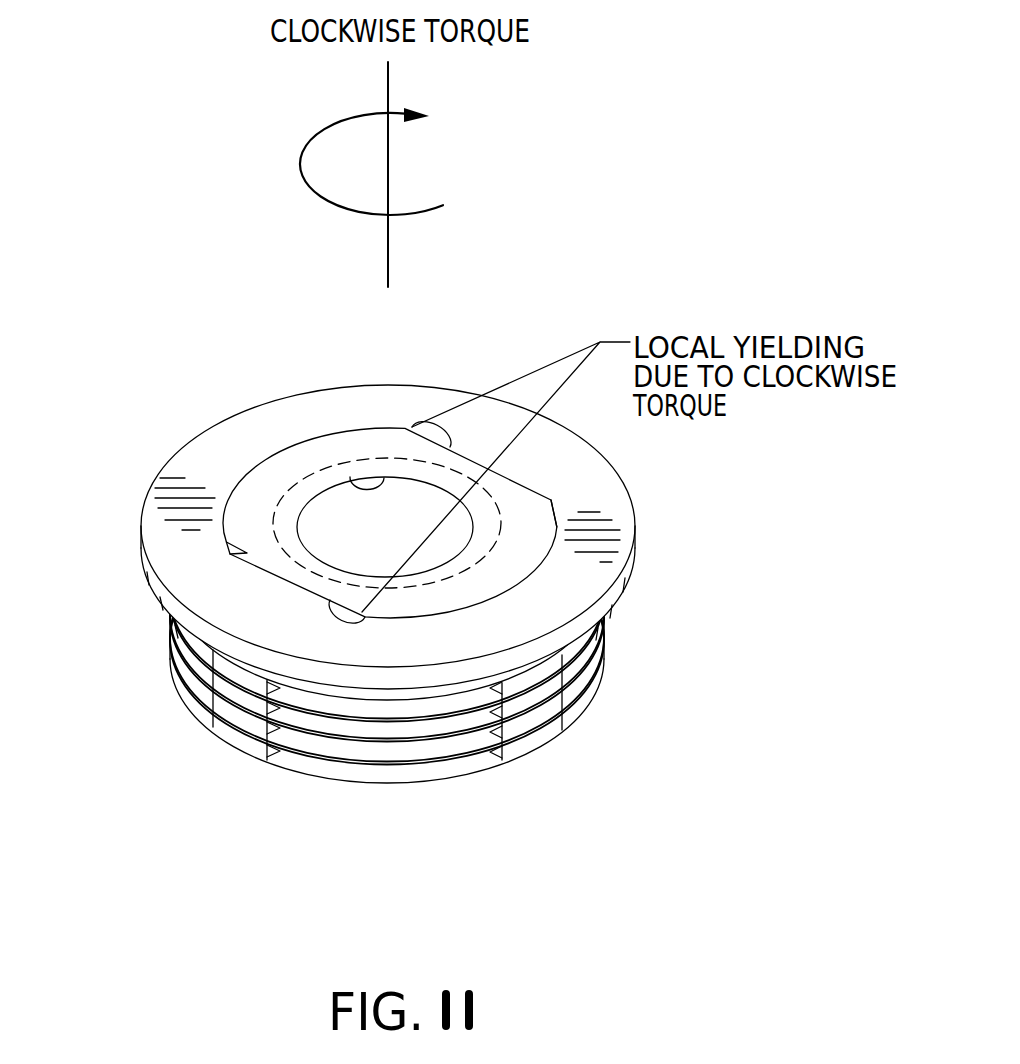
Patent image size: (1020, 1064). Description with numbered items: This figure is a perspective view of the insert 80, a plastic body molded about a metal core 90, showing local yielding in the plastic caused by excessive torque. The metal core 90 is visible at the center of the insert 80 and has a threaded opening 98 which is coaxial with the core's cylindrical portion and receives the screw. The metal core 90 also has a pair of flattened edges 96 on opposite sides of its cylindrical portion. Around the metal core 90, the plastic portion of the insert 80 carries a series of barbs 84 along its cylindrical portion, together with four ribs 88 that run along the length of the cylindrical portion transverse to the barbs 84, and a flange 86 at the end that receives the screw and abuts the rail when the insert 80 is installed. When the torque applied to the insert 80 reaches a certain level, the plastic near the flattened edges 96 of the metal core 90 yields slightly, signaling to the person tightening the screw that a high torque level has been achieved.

The insert 80 is at (178, 565).
The barbs 84 is at (348, 778).
The flange 86 is at (598, 483).
The ribs 88 is at (535, 738).
The metal core 90 is at (477, 581).
The flattened edges 96 is at (550, 497).
The threaded opening 98 is at (382, 488).